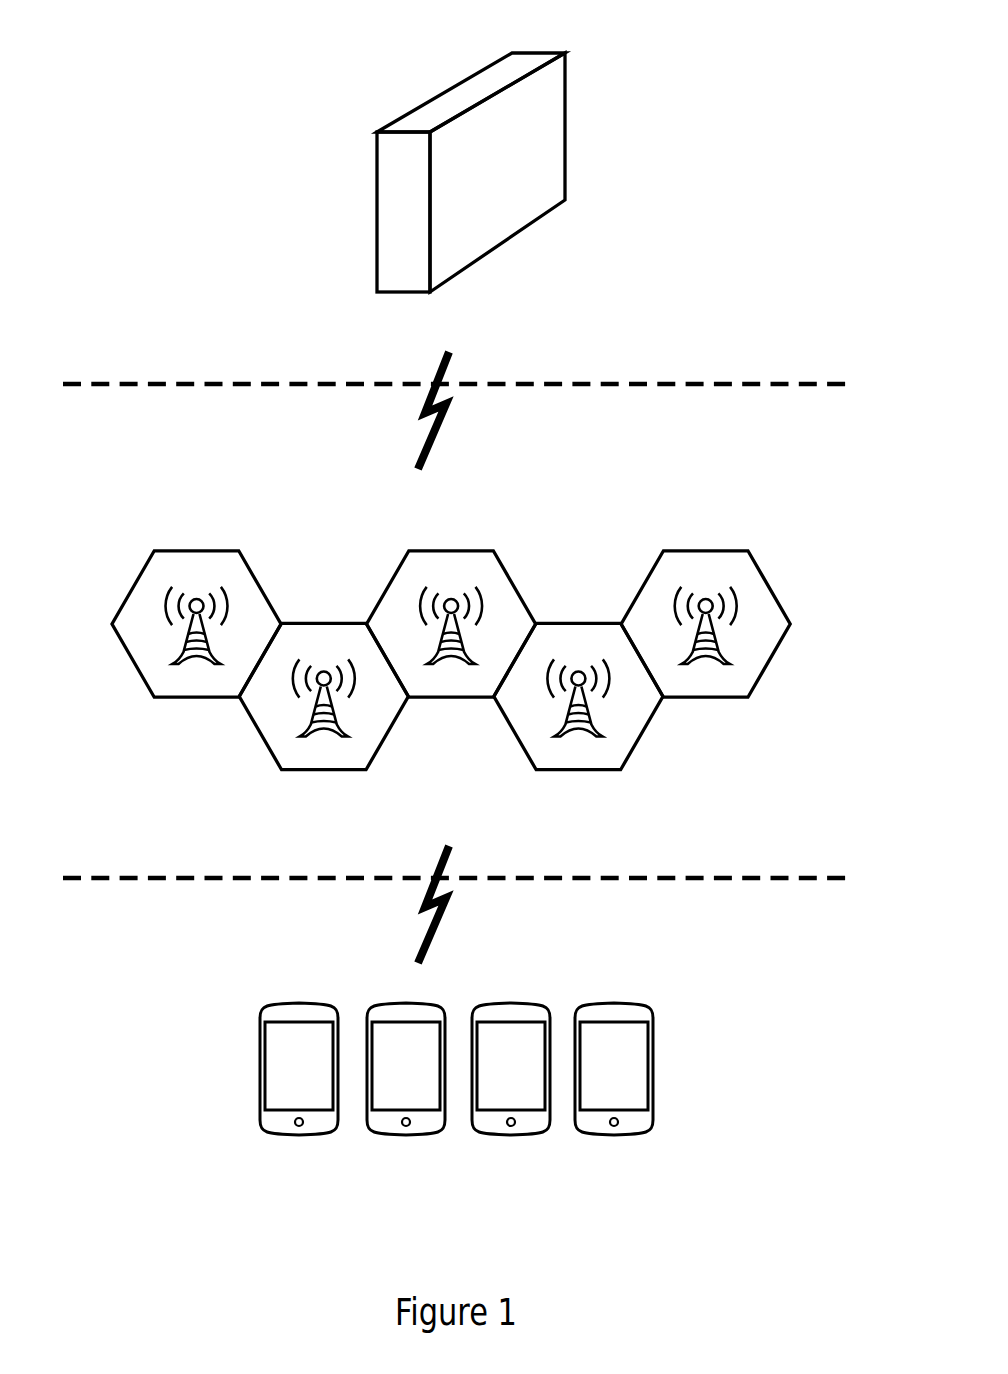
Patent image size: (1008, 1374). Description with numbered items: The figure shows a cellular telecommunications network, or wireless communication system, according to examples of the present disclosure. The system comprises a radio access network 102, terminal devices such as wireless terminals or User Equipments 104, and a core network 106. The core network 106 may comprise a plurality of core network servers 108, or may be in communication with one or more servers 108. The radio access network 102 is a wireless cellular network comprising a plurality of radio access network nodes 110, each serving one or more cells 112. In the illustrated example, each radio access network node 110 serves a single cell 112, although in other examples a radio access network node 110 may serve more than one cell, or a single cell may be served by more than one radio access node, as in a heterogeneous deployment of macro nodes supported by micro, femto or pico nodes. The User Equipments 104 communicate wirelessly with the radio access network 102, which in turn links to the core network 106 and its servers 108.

The radio access network 102 is at (810, 485).
The User Equipments 104 is at (397, 1145).
The core network 106 is at (810, 75).
The core network server 108 is at (570, 107).
The radio access network node 110 is at (183, 623).
The cell 112 is at (252, 570).